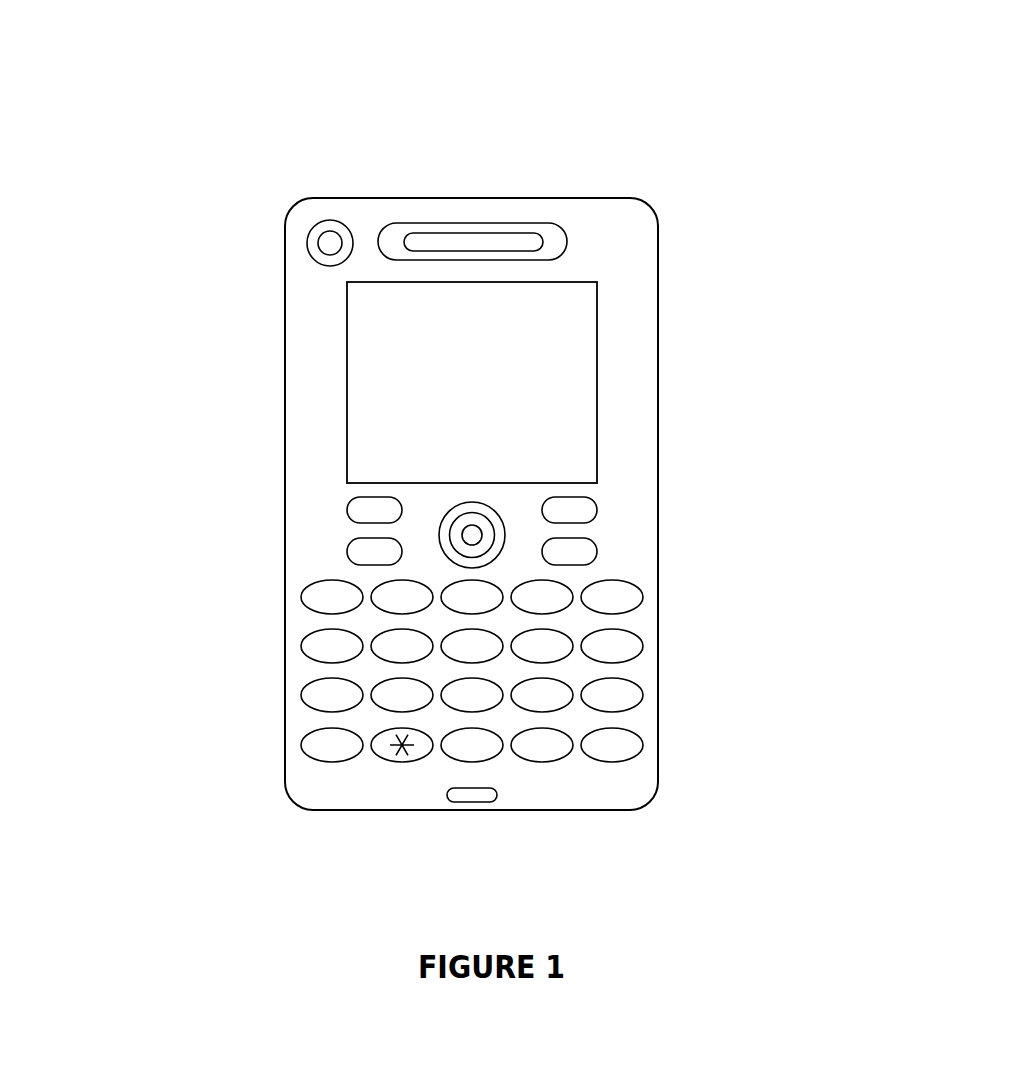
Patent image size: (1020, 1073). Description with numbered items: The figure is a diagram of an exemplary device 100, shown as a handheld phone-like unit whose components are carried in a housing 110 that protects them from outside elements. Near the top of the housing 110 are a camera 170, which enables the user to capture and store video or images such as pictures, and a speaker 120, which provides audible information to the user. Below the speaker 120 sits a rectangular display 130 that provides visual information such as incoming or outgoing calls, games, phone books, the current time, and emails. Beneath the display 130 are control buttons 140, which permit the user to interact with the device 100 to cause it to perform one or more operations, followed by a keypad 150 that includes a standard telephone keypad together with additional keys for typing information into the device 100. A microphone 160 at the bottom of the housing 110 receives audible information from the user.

The device 100 is at (146, 159).
The housing 110 is at (285, 502).
The speaker 120 is at (472, 223).
The display 130 is at (597, 381).
The control buttons 140 is at (610, 490).
The keypad 150 is at (627, 777).
The microphone 160 is at (473, 802).
The camera 170 is at (305, 240).